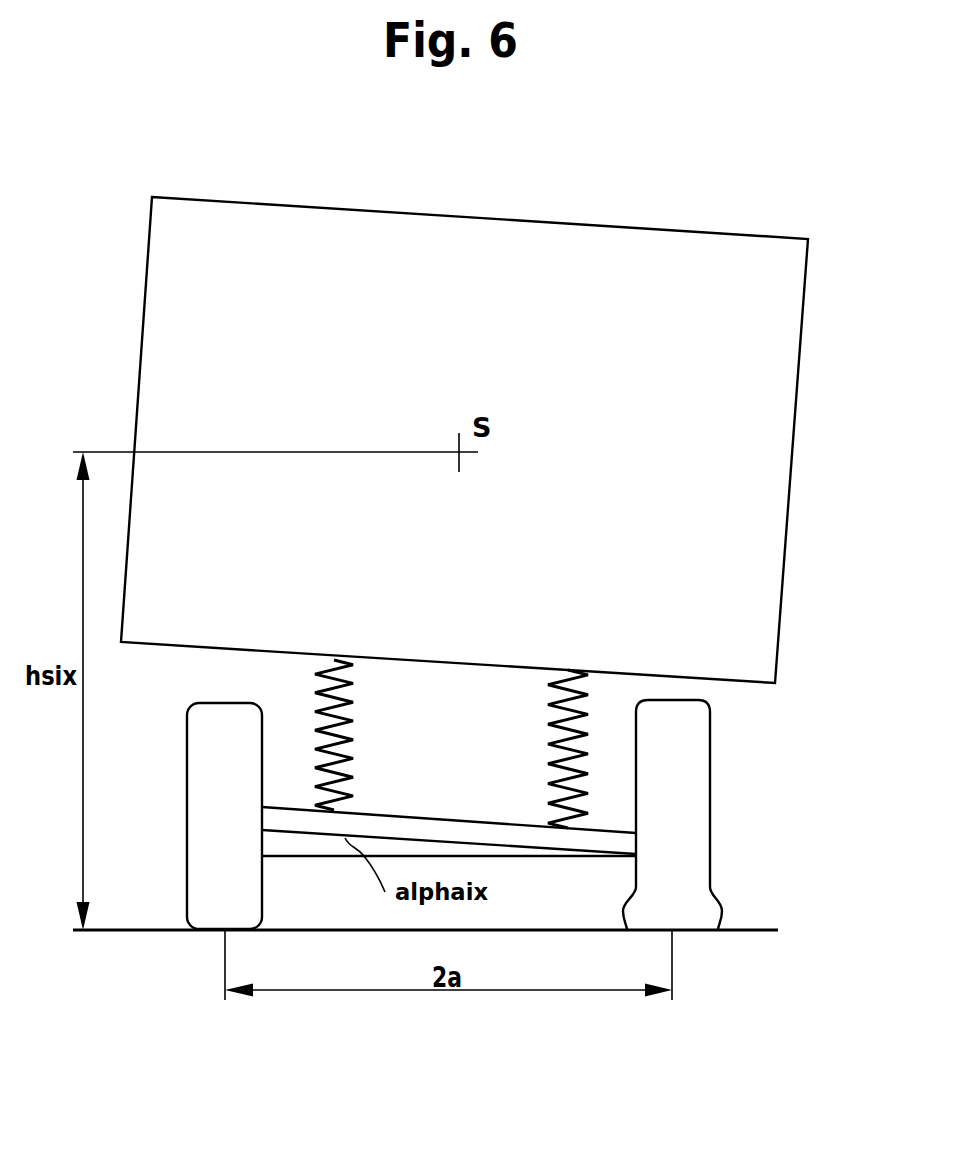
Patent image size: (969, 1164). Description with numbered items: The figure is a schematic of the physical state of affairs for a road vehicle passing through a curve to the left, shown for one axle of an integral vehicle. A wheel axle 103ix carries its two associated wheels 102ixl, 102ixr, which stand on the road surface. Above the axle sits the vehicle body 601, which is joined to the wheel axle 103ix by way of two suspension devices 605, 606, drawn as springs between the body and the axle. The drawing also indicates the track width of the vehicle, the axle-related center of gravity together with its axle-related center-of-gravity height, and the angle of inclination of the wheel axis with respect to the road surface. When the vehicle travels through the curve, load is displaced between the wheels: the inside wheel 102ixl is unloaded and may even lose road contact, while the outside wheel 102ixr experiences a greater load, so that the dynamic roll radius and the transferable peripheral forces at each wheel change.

The vehicle body 601 is at (763, 488).
The suspension device 605 is at (350, 710).
The suspension device 606 is at (557, 752).
The wheel axle 103ix is at (424, 830).
The wheel 102ixl is at (198, 800).
The wheel 102ixr is at (700, 798).